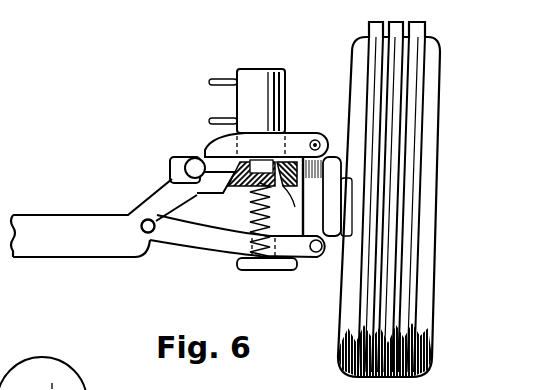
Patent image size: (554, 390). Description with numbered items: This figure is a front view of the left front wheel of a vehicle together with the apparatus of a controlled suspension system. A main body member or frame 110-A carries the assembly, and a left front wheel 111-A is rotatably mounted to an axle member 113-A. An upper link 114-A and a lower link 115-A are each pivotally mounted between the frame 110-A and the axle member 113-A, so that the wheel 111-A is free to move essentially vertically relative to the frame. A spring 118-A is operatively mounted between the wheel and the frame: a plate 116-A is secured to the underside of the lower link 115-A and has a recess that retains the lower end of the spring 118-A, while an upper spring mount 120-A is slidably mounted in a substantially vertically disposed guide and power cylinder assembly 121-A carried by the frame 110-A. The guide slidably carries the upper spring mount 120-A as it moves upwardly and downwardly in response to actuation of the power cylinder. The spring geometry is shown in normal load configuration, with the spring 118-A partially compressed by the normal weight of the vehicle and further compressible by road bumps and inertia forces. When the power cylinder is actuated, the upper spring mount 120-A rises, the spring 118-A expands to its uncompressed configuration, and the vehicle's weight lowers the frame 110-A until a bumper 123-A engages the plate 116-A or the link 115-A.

The main body member or frame 110-A is at (106, 258).
The left front wheel 111-A is at (352, 85).
The axle member 113-A is at (337, 156).
The upper link 114-A is at (295, 137).
The lower link 115-A is at (193, 250).
The plate 116-A is at (275, 283).
The spring 118-A is at (268, 221).
The upper spring mount 120-A is at (250, 188).
The guide and power cylinder assembly 121-A is at (247, 78).
The bumper 123-A is at (285, 188).